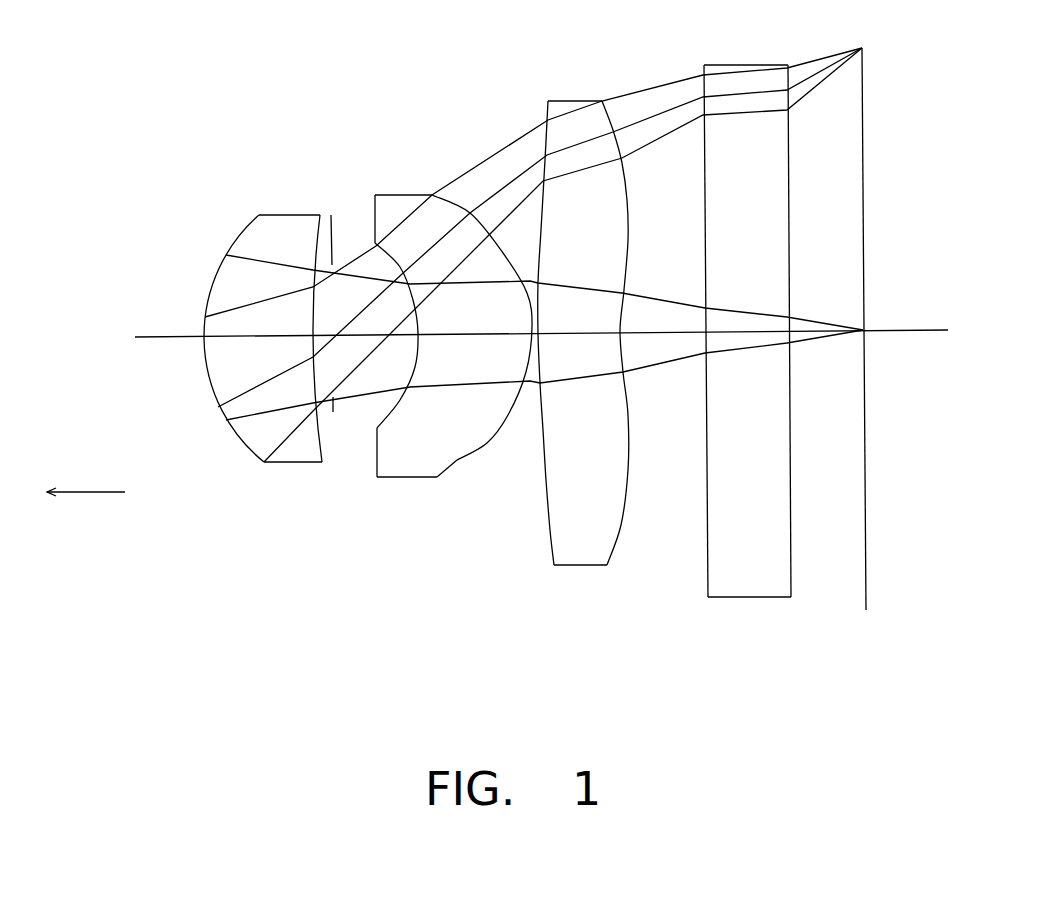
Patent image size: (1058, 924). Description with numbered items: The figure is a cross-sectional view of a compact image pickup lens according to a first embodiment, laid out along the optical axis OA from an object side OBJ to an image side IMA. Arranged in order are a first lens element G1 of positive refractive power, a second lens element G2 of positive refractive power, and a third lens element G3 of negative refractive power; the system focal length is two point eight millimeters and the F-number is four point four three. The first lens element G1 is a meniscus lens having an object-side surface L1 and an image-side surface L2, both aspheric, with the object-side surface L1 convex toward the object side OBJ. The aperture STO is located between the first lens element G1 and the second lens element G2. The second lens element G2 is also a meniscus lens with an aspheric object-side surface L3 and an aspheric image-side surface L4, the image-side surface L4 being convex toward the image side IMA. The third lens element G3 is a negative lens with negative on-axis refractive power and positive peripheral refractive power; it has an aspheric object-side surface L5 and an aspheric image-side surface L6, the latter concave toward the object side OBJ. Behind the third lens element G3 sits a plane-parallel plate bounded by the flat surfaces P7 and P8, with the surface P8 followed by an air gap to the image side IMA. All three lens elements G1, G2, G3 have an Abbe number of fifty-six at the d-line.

The optical axis OA is at (516, 338).
The object side OBJ is at (86, 477).
The image side IMA is at (862, 350).
The aperture STO is at (331, 215).
The first lens element G1 is at (263, 342).
The object-side surface L1 is at (243, 227).
The image-side surface L2 is at (323, 437).
The second lens element G2 is at (422, 347).
The object-side surface L3 is at (374, 198).
The image-side surface L4 is at (457, 462).
The third lens element G3 is at (569, 395).
The object-side surface L5 is at (552, 538).
The image-side surface L6 is at (615, 548).
The surface P7 is at (707, 568).
The surface P8 is at (792, 575).